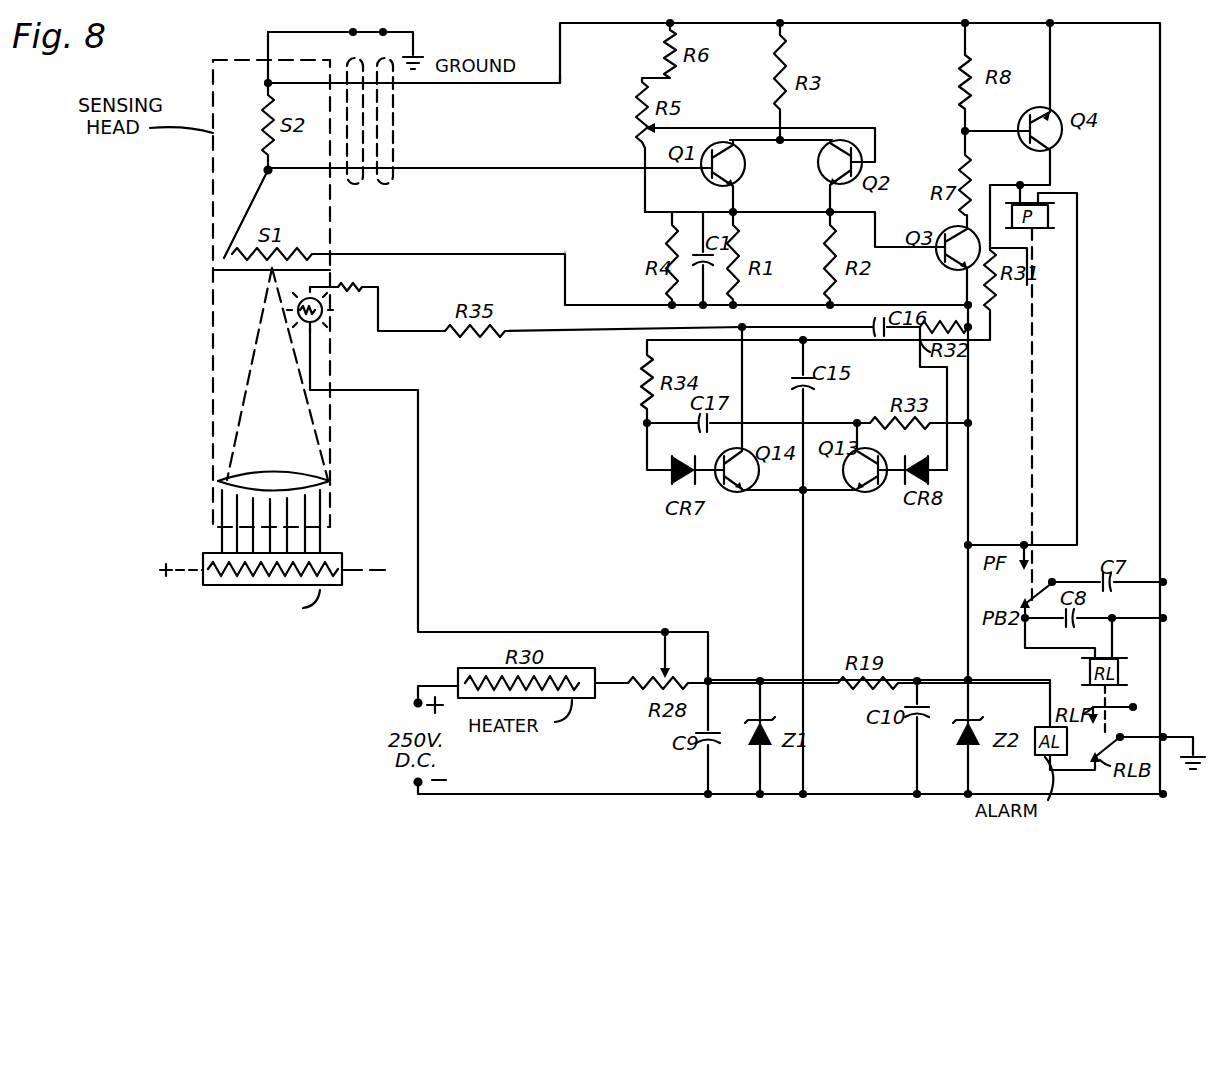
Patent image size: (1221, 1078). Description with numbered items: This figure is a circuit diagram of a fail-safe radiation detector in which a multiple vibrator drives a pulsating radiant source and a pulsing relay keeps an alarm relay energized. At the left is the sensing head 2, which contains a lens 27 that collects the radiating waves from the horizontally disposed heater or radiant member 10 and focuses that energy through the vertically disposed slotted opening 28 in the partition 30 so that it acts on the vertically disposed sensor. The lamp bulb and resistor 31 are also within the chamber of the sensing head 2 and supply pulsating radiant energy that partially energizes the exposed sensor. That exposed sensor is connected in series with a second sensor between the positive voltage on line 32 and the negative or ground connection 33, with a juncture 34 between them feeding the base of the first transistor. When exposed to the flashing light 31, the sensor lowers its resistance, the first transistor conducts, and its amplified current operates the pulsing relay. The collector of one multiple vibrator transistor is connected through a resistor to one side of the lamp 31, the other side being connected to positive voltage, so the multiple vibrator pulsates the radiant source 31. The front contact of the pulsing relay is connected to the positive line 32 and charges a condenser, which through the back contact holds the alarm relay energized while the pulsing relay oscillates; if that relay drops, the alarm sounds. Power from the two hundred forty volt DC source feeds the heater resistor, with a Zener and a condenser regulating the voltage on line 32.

The sensing head 2 is at (213, 206).
The heater or radiant member 10 is at (210, 560).
The lens 27 is at (284, 456).
The slotted opening 28 is at (268, 282).
The partition 30 is at (228, 272).
The lamp bulb and resistor 31 is at (328, 311).
The positive voltage line 32 is at (565, 253).
The negative or ground connection 33 is at (560, 84).
The juncture 34 is at (270, 169).